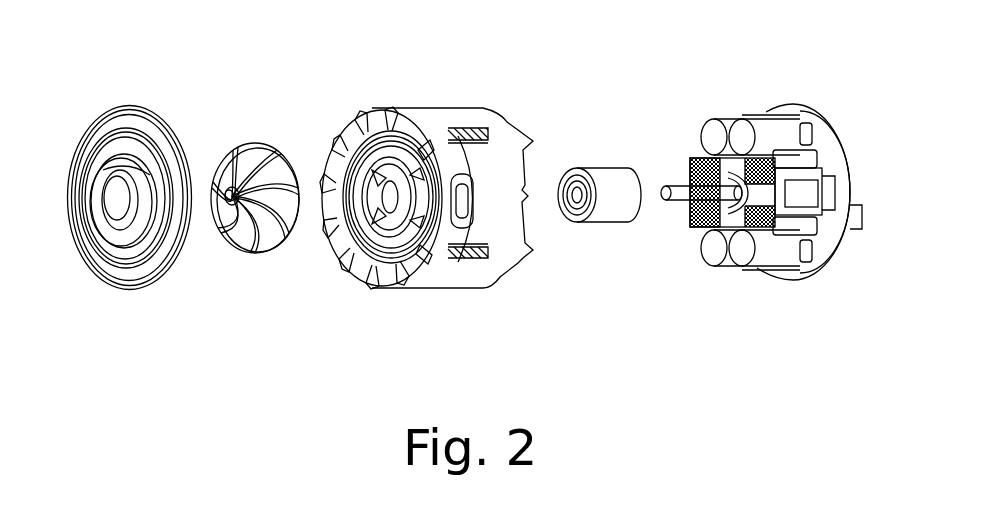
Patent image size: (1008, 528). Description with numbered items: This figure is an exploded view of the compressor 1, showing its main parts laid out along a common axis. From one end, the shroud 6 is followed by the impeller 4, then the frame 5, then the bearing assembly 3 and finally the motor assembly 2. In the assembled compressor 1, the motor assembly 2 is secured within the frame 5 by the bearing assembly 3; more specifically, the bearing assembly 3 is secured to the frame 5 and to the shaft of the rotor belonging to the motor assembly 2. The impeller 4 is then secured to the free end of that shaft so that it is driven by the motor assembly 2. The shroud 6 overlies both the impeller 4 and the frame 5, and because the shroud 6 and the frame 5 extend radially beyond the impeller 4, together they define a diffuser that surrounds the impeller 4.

The compressor 1 is at (632, 68).
The motor assembly 2 is at (790, 280).
The bearing assembly 3 is at (603, 222).
The impeller 4 is at (263, 253).
The frame 5 is at (438, 288).
The shroud 6 is at (128, 290).